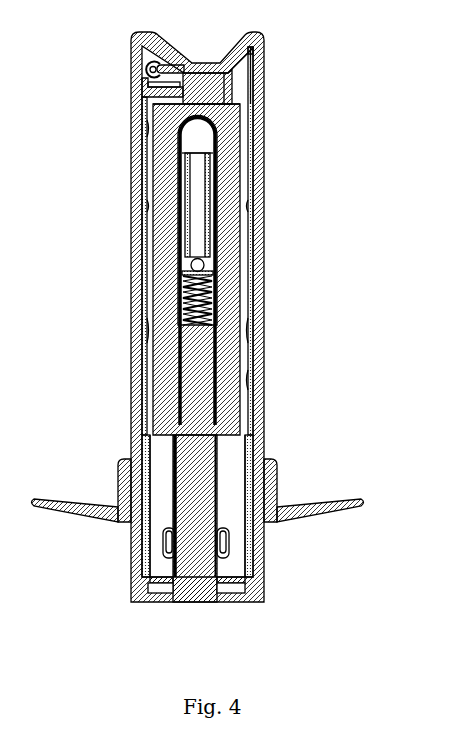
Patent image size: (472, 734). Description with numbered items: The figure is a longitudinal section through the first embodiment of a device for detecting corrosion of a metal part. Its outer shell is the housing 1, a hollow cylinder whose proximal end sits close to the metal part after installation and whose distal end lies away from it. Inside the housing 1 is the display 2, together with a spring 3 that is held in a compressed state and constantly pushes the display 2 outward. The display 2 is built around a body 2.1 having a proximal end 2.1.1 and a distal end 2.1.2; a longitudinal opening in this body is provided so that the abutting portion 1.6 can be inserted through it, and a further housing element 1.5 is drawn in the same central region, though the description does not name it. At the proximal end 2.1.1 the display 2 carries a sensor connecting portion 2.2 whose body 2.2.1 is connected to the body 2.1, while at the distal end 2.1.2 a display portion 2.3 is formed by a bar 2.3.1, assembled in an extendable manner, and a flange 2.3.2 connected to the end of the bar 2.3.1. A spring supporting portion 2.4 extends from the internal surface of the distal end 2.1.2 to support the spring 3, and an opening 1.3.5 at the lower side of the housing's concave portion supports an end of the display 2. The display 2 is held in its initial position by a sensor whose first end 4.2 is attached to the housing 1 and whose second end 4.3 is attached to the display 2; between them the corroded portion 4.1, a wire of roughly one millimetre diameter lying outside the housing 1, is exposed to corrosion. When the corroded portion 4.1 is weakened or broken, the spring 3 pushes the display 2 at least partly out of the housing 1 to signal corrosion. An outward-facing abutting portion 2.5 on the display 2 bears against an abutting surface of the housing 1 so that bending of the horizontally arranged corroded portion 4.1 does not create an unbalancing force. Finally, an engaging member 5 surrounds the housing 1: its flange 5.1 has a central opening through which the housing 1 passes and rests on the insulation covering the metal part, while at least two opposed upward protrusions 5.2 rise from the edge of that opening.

The housing 1 is at (264, 147).
The opening 1.3.5 is at (198, 64).
The pin 1.5 is at (207, 242).
The abutting portion 1.6 is at (205, 264).
The display 2 is at (146, 253).
The body 2.1 is at (243, 207).
The proximal end 2.1.1 is at (232, 105).
The distal end 2.1.2 is at (237, 432).
The sensor connecting portion 2.2 is at (234, 61).
The body 2.2.1 is at (254, 46).
The display portion 2.3 is at (162, 502).
The bar 2.3.1 is at (229, 556).
The flange 2.3.2 is at (232, 600).
The spring supporting portion 2.4 is at (234, 378).
The abutting portion 2.5 is at (147, 143).
The spring 3 is at (212, 308).
The corroded portion 4.1 is at (185, 65).
The first end 4.2 is at (143, 85).
The second end 4.3 is at (228, 80).
The engaging member 5 is at (112, 487).
The flange 5.1 is at (290, 513).
The upward protrusions 5.2 is at (270, 463).